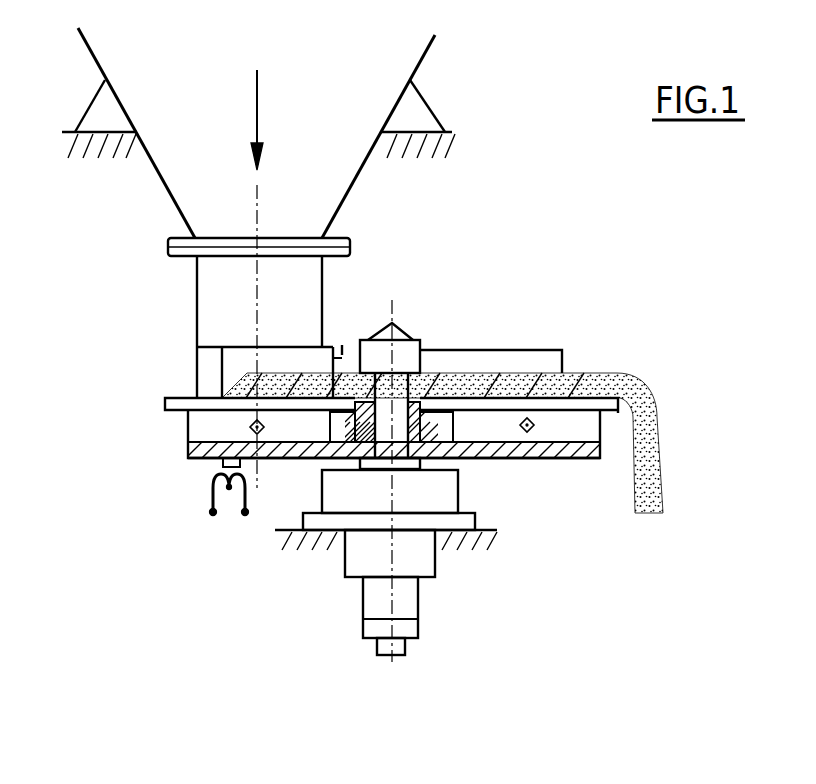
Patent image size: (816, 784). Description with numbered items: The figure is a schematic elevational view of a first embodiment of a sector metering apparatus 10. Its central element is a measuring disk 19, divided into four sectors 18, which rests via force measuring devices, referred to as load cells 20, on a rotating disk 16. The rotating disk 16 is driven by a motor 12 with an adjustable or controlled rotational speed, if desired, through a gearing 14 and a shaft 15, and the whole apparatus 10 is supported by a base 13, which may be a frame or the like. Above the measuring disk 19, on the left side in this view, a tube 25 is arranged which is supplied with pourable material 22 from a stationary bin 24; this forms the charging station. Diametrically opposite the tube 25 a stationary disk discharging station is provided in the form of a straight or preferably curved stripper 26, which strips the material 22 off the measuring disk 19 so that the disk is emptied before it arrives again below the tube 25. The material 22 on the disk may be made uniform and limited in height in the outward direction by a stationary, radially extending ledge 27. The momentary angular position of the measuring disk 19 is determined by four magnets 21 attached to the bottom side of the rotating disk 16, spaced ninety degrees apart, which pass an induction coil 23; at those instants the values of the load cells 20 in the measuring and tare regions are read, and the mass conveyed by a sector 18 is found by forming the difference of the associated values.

The sector metering apparatus 10 is at (136, 387).
The motor 12 is at (413, 605).
The base 13 is at (490, 542).
The gearing 14 is at (443, 503).
The shaft 15 is at (415, 342).
The rotating disk 16 is at (567, 452).
The sectors 18 is at (180, 408).
The measuring disk 19 is at (190, 398).
The load cells 20 is at (225, 428).
The magnets 21 is at (223, 463).
The pourable material 22 is at (588, 370).
The induction coil 23 is at (210, 493).
The stationary bin 24 is at (342, 192).
The tube 25 is at (322, 293).
The stripper 26 is at (502, 343).
The ledge 27 is at (342, 350).